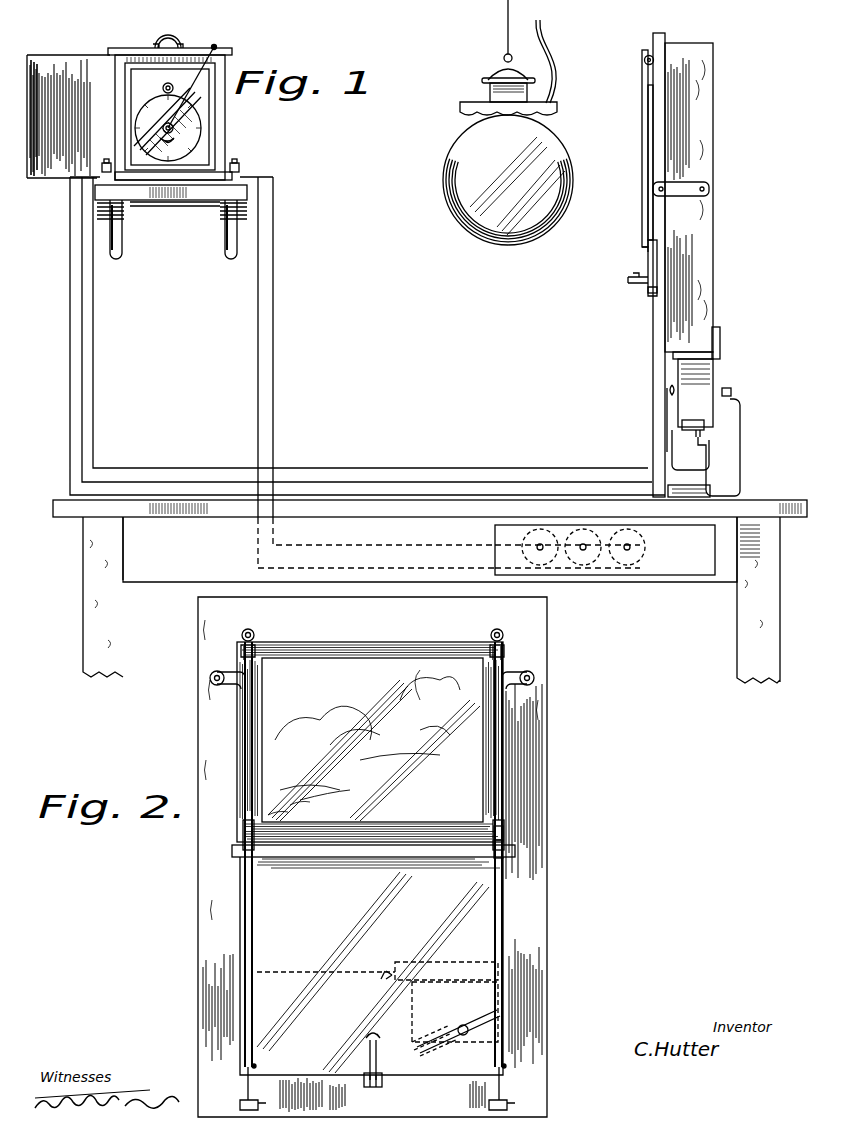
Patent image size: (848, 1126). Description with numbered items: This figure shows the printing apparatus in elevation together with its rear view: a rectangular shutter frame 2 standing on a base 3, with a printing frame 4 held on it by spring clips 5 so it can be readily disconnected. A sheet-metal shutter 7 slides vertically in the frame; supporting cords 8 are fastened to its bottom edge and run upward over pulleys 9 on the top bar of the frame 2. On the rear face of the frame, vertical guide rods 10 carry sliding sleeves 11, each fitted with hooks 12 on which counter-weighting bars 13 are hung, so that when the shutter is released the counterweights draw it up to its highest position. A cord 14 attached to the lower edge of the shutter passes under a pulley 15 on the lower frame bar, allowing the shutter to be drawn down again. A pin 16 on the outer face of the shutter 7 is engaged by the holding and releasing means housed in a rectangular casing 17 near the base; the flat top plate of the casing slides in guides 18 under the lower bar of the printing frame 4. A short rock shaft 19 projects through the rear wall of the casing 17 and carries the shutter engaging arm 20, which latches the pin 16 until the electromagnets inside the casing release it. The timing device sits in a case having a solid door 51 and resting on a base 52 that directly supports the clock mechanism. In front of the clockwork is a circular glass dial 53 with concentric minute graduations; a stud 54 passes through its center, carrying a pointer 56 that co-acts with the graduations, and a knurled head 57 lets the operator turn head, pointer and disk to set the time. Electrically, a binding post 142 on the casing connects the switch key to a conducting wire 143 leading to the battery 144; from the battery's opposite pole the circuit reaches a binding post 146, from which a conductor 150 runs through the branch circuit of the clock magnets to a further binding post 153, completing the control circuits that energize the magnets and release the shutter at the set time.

In FIG. 1, the shutter frame 2 is at (690, 120).
In FIG. 2, the shutter frame 2 is at (389, 857).
In FIG. 1, the base 3 is at (705, 495).
In FIG. 1, the printing frame 4 is at (713, 252).
In FIG. 1, the spring clips 5 is at (702, 186).
In FIG. 2, the shutter 7 is at (370, 769).
In FIG. 1, the supporting cords 8 is at (642, 79).
In FIG. 2, the supporting cords 8 is at (497, 668).
In FIG. 1, the pulleys 9 is at (644, 60).
In FIG. 2, the pulleys 9 is at (506, 643).
In FIG. 1, the guide rods 10 is at (647, 97).
In FIG. 2, the guide rods 10 is at (227, 685).
In FIG. 1, the sleeves 11 is at (647, 258).
In FIG. 2, the sleeves 11 is at (502, 832).
In FIG. 1, the hooks 12 is at (646, 291).
In FIG. 2, the hooks 12 is at (503, 842).
In FIG. 1, the counter-weighting bars 13 is at (627, 280).
In FIG. 2, the counter-weighting bars 13 is at (383, 847).
In FIG. 2, the cord 14 is at (369, 1053).
In FIG. 2, the pulley 15 is at (383, 1086).
In FIG. 1, the pin 16 is at (710, 441).
In FIG. 2, the pin 16 is at (477, 1016).
In FIG. 1, the casing 17 is at (705, 375).
In FIG. 2, the casing 17 is at (450, 973).
In FIG. 1, the guides 18 is at (700, 352).
In FIG. 1, the rock shaft 19 is at (668, 392).
In FIG. 2, the rock shaft 19 is at (390, 975).
In FIG. 1, the shutter engaging arm 20 is at (667, 418).
In FIG. 2, the shutter engaging arm 20 is at (443, 1040).
In FIG. 1, the door 51 is at (36, 166).
In FIG. 1, the base 52 is at (239, 168).
In FIG. 1, the dial 53 is at (200, 77).
In FIG. 1, the stud 54 is at (166, 131).
In FIG. 1, the pointer 56 is at (177, 110).
In FIG. 1, the knurled head 57 is at (164, 126).
In FIG. 1, the binding post 142 is at (731, 392).
In FIG. 1, the conducting wire 143 is at (276, 320).
In FIG. 1, the battery 144 is at (592, 557).
In FIG. 1, the binding post 146 is at (242, 174).
In FIG. 1, the conductor 150 is at (223, 130).
In FIG. 1, the binding post 153 is at (697, 434).